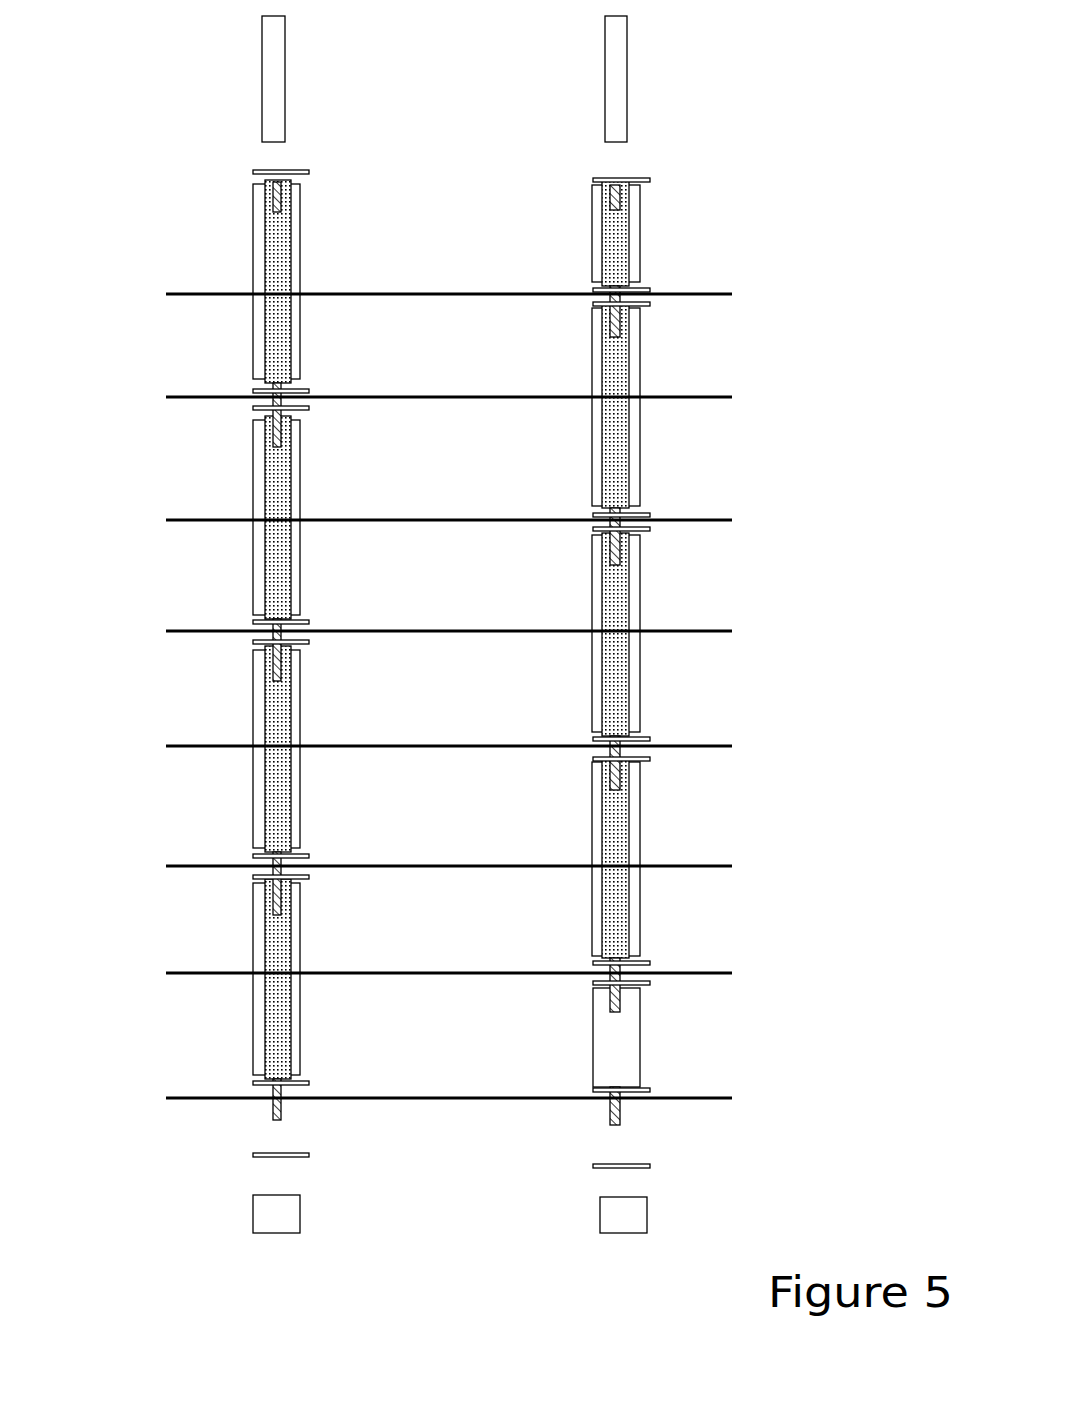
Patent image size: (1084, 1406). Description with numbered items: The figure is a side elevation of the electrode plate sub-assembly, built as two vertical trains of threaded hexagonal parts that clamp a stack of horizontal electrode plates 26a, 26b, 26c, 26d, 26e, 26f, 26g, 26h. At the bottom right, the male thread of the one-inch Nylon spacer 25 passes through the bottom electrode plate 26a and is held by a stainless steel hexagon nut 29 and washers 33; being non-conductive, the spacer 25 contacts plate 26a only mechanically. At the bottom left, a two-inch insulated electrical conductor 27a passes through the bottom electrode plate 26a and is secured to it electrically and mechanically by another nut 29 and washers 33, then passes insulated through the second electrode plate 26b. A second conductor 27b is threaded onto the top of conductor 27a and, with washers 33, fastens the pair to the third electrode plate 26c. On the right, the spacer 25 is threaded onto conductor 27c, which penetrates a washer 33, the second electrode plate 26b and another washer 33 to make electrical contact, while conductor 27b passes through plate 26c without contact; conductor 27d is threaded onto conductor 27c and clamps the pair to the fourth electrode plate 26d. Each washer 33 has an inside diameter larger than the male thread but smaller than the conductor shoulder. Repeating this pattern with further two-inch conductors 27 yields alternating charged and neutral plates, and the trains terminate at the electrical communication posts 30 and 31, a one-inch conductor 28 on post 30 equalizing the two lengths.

The Nylon spacer 25 is at (640, 1055).
The bottom electrode plate 26a is at (716, 1098).
The second electrode plate 26b is at (716, 973).
The third electrode plate 26c is at (716, 866).
The fourth electrode plate 26d is at (716, 746).
The electrode plate 26e is at (716, 631).
The electrode plate 26f is at (716, 520).
The electrode plate 26g is at (716, 397).
The electrode plate 26h is at (716, 294).
The two-inch long electrical conductor 27 is at (253, 333).
The insulated electrical conductor 27a is at (253, 1006).
The second insulated electrical conductor 27b is at (253, 785).
The insulated electrical conductor 27c is at (640, 832).
The insulated electrical conductor 27d is at (640, 605).
The one-inch long electrical conductor 28 is at (640, 232).
The stainless steel hexagon nut 29 is at (602, 1212).
The electrical communication post 30 is at (627, 76).
The electrical communication post 31 is at (260, 97).
The washer 33 is at (593, 289).